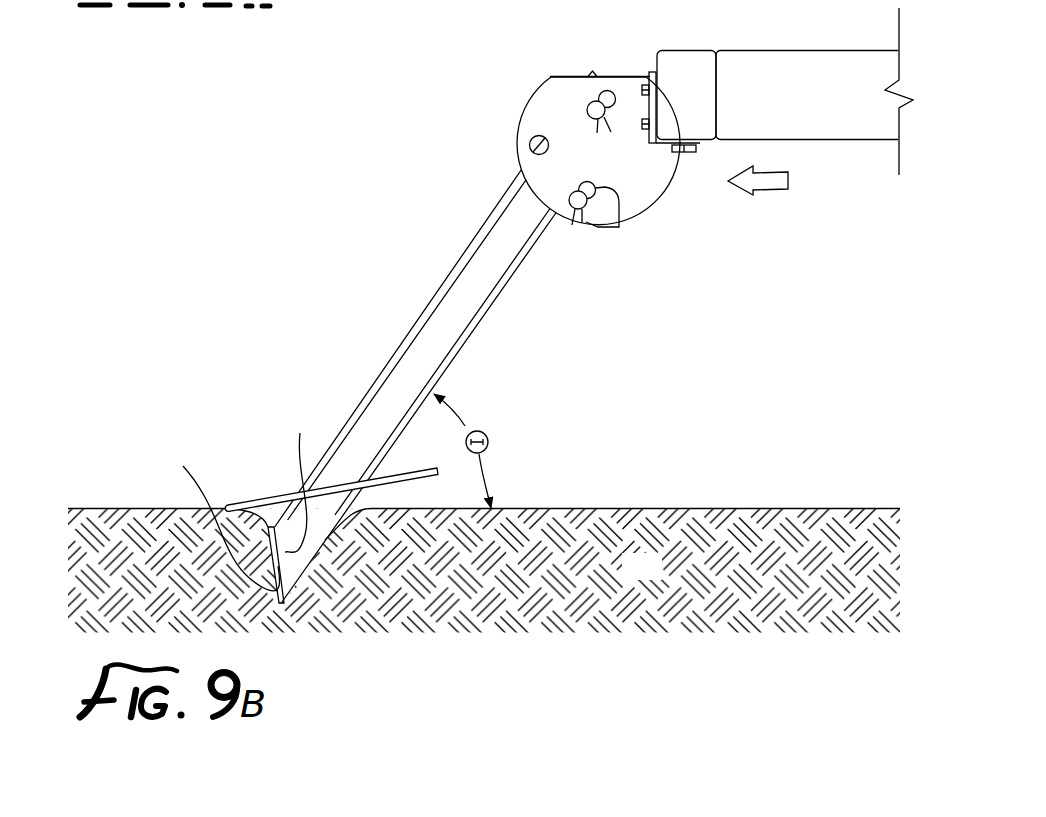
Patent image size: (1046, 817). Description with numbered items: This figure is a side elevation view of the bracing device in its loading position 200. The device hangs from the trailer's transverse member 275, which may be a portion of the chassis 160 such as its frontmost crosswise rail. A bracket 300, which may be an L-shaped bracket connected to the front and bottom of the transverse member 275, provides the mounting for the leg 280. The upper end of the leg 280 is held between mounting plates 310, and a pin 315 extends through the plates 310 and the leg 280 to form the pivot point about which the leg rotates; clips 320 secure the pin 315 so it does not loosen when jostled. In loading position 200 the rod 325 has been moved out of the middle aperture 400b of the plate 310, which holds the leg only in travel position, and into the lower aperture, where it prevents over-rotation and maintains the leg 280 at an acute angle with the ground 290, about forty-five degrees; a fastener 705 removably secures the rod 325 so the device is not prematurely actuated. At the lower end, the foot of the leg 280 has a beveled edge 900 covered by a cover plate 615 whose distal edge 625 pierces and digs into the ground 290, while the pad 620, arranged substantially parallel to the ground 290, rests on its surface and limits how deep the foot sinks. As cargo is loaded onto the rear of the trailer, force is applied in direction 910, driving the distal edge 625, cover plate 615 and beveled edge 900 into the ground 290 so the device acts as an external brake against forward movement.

The chassis 160 is at (787, 106).
The loading position 200 is at (361, 417).
The transverse member 275 is at (669, 108).
The leg 280 is at (412, 361).
The ground 290 is at (625, 579).
The bracket 300 is at (700, 143).
The mounting plate 310 is at (635, 170).
The pin 315 is at (588, 102).
The clip 320 is at (609, 92).
The rod 325 is at (570, 217).
The middle aperture 400b is at (530, 146).
The cover plate 615 is at (218, 518).
The pad 620 is at (258, 497).
The distal edge 625 is at (282, 603).
The fastener 705 is at (619, 227).
The beveled edge 900 is at (303, 482).
The direction 910 is at (767, 190).